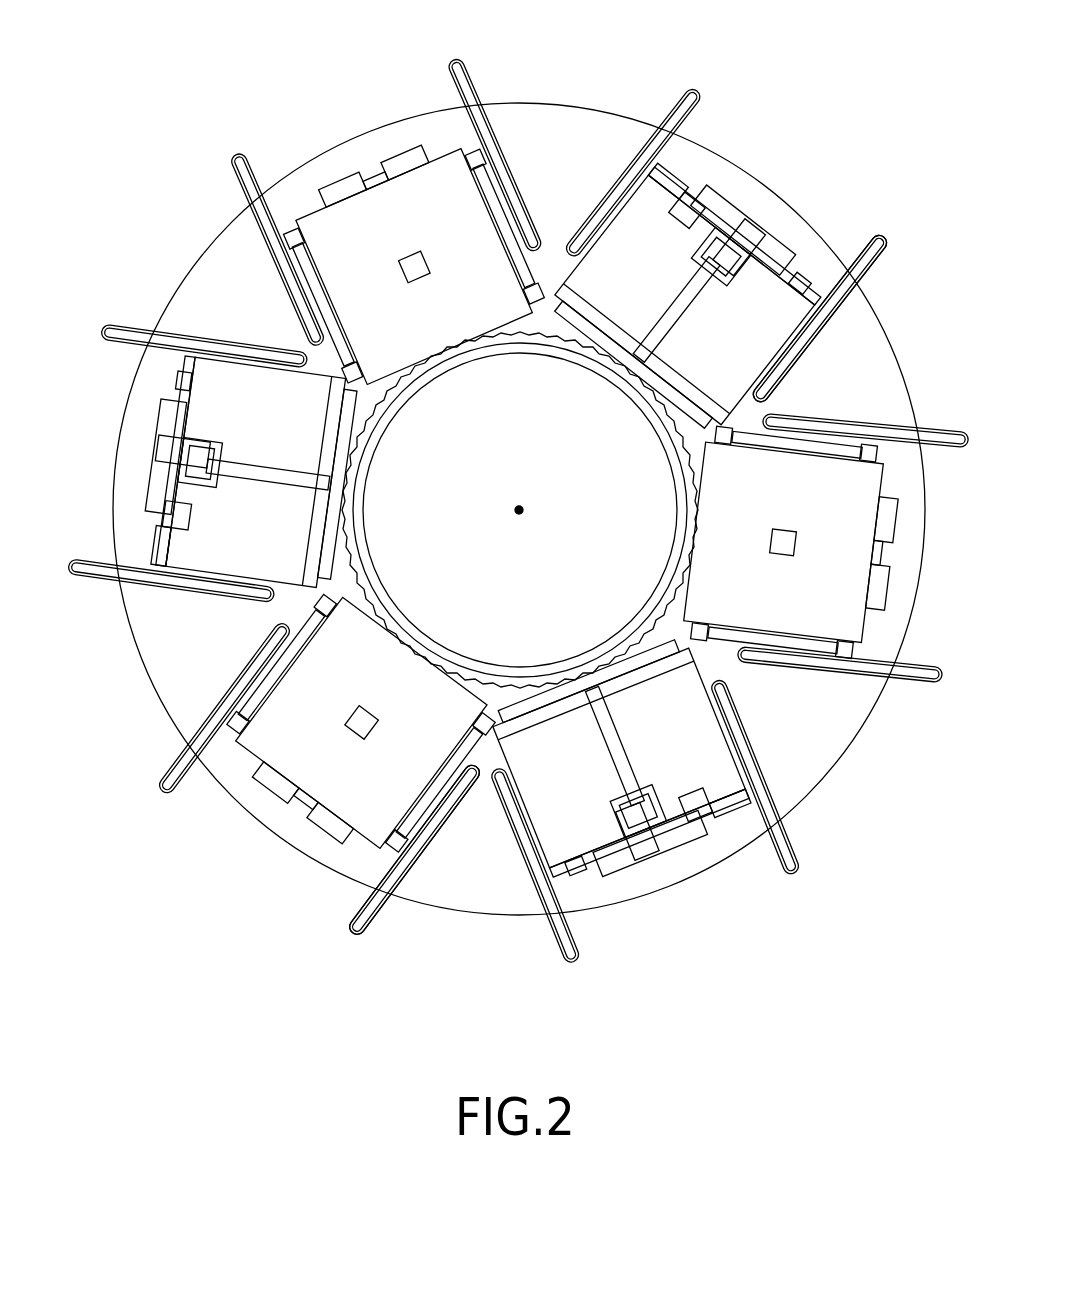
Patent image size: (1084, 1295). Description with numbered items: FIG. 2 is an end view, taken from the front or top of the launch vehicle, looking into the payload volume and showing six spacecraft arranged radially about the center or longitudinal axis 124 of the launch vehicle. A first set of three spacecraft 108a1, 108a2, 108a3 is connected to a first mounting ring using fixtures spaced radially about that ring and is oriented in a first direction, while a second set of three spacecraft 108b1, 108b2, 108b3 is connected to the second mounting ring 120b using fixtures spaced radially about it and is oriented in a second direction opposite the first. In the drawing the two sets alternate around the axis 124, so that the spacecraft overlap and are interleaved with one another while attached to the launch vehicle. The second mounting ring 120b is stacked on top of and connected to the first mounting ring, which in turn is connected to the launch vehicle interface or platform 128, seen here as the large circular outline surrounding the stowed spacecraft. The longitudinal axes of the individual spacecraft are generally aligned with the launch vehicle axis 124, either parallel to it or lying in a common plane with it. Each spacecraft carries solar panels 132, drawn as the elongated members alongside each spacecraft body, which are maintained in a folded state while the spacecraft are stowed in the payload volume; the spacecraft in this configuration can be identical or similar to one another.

The spacecraft of the first set 108a1 is at (597, 766).
The spacecraft of the first set 108a2 is at (744, 359).
The spacecraft of the first set 108a3 is at (289, 538).
The spacecraft of the second set 108b1 is at (815, 591).
The spacecraft of the second set 108b2 is at (447, 324).
The spacecraft of the second set 108b3 is at (394, 786).
The second mounting ring 120b is at (360, 580).
The longitudinal axis 124 is at (524, 510).
The launch vehicle interface or platform 128 is at (608, 108).
The spacecraft solar panels 132 is at (862, 262).